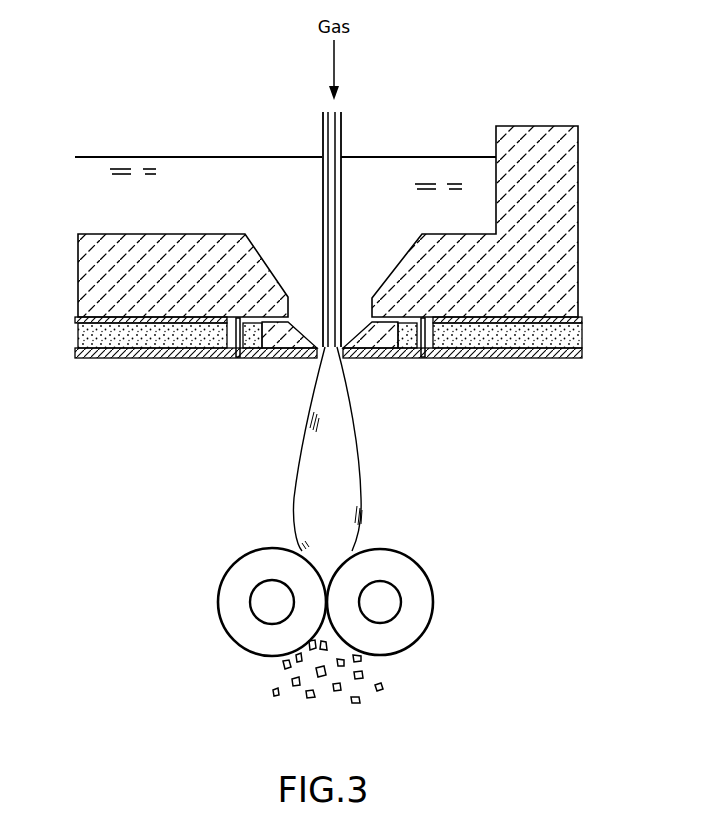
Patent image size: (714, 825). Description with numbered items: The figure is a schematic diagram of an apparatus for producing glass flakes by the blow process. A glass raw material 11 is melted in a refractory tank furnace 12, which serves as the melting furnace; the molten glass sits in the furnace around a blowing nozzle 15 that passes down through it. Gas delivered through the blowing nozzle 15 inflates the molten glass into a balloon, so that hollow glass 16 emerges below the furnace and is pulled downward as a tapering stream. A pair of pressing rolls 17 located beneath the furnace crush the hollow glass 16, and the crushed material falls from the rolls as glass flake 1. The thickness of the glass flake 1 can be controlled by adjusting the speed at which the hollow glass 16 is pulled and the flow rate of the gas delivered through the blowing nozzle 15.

The glass flake 1 is at (384, 689).
The glass raw material 11 is at (196, 171).
The refractory tank furnace 12 is at (546, 135).
The blowing nozzle 15 is at (343, 131).
The hollow glass 16 is at (355, 488).
The pressing rolls 17 is at (415, 601).